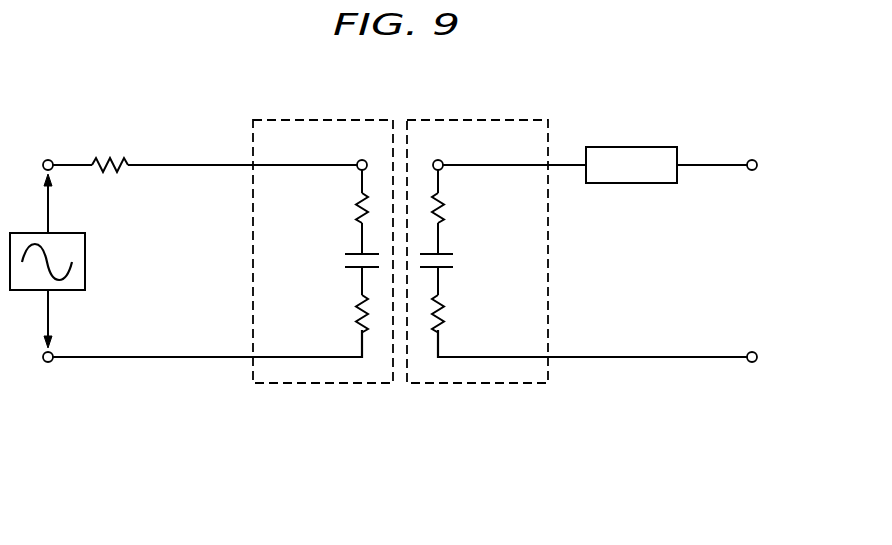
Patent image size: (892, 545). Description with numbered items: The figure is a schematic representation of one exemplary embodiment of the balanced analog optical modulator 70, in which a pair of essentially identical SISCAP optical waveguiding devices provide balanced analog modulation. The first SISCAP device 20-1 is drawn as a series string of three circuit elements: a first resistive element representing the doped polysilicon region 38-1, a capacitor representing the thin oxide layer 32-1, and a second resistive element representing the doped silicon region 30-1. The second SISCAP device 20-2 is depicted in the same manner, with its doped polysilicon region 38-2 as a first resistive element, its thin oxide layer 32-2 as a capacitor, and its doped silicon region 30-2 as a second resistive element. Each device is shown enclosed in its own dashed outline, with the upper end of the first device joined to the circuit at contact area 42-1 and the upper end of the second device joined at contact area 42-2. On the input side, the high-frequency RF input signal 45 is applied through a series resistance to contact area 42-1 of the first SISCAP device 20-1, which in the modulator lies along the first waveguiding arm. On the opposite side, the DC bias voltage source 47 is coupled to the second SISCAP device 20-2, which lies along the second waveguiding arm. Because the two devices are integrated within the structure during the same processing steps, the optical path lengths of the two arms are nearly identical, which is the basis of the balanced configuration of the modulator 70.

The balanced analog optical modulator 70 is at (160, 88).
The RF input signal 45 is at (62, 232).
The DC bias voltage source 47 is at (635, 147).
The first SISCAP device 20-1 is at (318, 118).
The second SISCAP device 20-2 is at (475, 118).
The contact area 42-1 is at (355, 158).
The contact area 42-2 is at (446, 158).
The doped polysilicon region 38-1 is at (355, 207).
The doped polysilicon region 38-2 is at (447, 207).
The thin oxide layer 32-1 is at (340, 259).
The thin oxide layer 32-2 is at (454, 259).
The doped silicon region 30-1 is at (356, 312).
The doped silicon region 30-2 is at (446, 312).